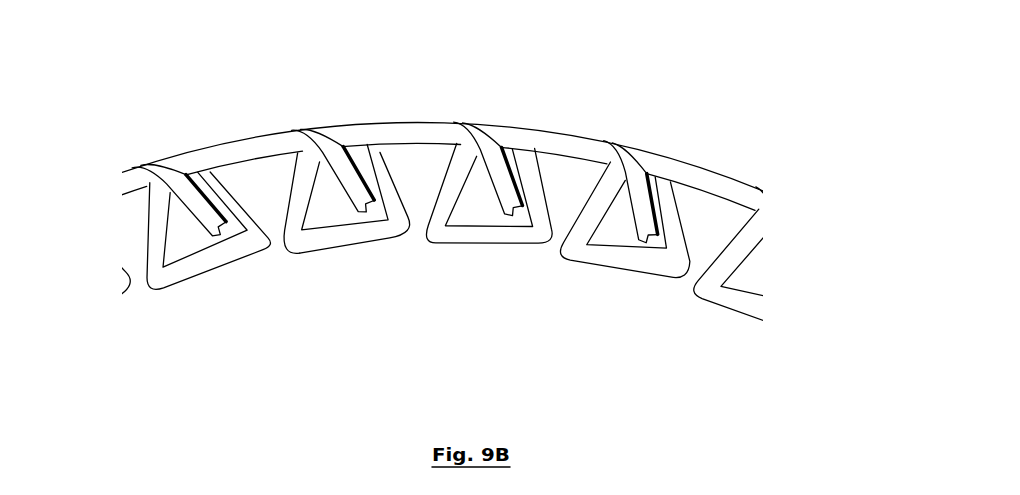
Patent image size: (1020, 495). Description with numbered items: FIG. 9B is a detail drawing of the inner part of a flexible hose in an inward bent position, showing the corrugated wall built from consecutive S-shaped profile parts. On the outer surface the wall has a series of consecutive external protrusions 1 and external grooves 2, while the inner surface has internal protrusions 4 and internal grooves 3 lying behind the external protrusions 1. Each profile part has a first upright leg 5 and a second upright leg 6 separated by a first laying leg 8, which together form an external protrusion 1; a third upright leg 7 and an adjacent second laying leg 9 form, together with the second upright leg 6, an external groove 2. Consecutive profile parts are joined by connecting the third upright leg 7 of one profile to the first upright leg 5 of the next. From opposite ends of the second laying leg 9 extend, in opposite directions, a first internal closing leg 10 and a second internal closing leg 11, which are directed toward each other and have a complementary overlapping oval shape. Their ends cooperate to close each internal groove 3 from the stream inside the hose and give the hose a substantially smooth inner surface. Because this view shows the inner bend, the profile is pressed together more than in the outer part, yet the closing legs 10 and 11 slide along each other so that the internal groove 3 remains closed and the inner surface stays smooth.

The external protrusion 1 is at (341, 264).
The external groove 2 is at (258, 177).
The internal groove 3 is at (327, 208).
The internal protrusion 4 is at (228, 136).
The first upright leg 5 is at (383, 193).
The second upright leg 6 is at (298, 190).
The third upright leg 7 is at (192, 195).
The first laying leg 8 is at (370, 236).
The second laying leg 9 is at (240, 150).
The first internal closing leg 10 is at (158, 167).
The second internal closing leg 11 is at (347, 193).